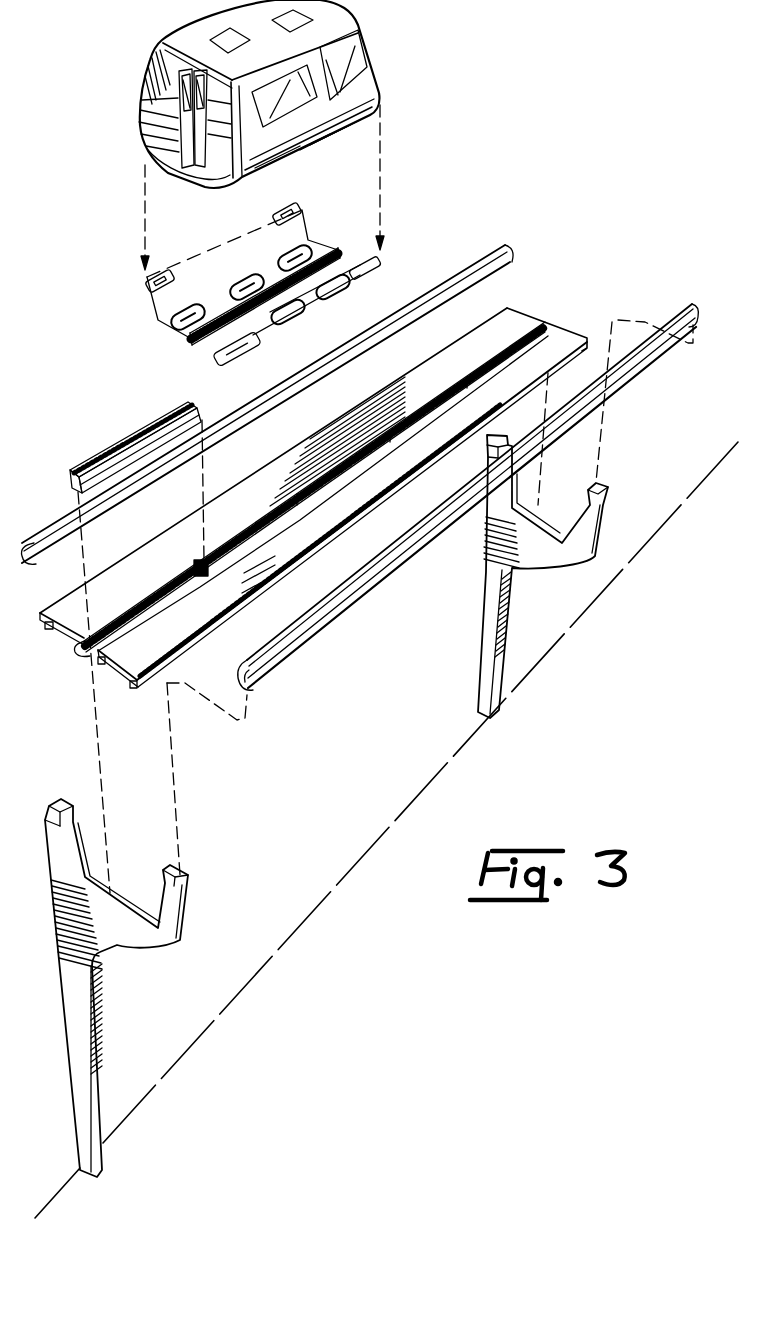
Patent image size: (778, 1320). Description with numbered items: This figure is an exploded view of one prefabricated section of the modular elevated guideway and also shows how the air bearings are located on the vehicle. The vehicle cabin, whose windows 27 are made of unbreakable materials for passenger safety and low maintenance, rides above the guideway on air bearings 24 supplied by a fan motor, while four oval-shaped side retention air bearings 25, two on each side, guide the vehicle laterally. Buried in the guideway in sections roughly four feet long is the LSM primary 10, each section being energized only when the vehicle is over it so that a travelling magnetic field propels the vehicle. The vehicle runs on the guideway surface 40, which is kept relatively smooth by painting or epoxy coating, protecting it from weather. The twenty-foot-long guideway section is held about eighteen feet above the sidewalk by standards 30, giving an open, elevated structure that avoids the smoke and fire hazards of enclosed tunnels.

The LSM primary 10 is at (104, 450).
The air bearing 24 is at (180, 343).
The side retention air bearings 25 is at (301, 207).
The windows 27 is at (164, 42).
The standards 30 is at (482, 615).
The guideway surface 40 is at (62, 597).